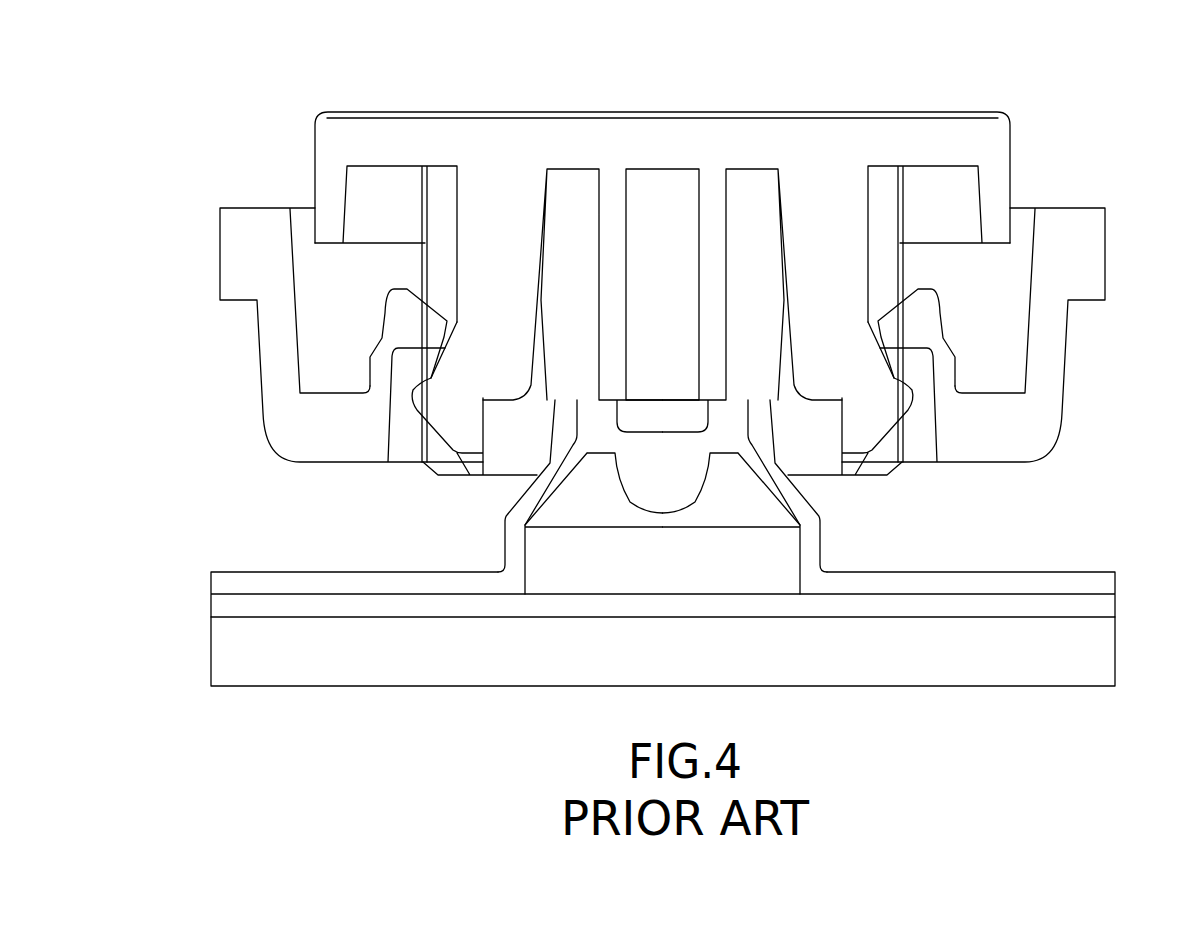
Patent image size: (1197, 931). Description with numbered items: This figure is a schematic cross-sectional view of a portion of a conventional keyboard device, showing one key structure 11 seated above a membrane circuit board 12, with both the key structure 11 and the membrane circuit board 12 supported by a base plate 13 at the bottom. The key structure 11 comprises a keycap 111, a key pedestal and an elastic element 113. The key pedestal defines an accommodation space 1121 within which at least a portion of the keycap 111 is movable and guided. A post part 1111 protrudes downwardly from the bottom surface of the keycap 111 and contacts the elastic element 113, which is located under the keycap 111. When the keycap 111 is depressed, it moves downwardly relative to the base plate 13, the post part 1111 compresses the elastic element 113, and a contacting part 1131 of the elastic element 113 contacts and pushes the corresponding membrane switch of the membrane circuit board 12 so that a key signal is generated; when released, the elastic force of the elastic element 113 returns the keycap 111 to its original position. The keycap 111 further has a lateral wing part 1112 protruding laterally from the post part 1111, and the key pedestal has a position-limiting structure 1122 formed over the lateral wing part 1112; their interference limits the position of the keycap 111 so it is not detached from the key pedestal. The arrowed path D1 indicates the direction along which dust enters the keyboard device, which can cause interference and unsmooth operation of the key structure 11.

The key structure 11 is at (653, 312).
The keycap 111 is at (662, 294).
The post part 1111 is at (662, 294).
The lateral wing part 1112 is at (453, 420).
The accommodation space 1121 is at (653, 316).
The position-limiting structure 1122 is at (400, 333).
The elastic element 113 is at (688, 497).
The contacting part 1131 is at (675, 493).
The membrane circuit board 12 is at (1097, 607).
The base plate 13 is at (1102, 665).
The path D1 is at (449, 306).